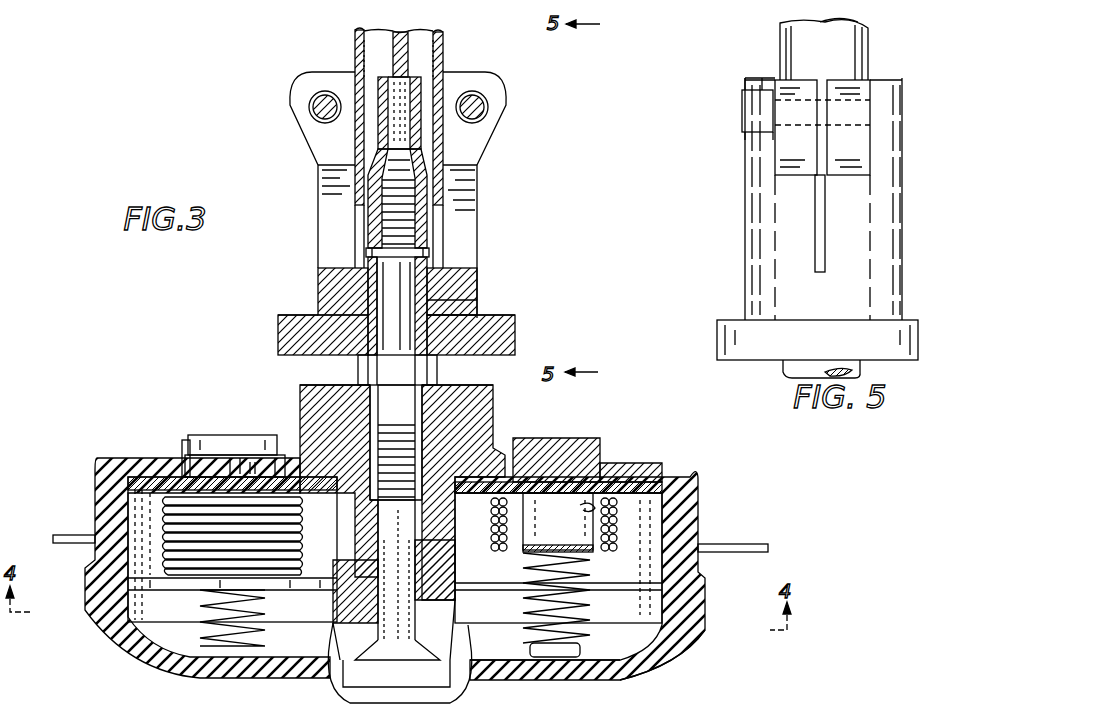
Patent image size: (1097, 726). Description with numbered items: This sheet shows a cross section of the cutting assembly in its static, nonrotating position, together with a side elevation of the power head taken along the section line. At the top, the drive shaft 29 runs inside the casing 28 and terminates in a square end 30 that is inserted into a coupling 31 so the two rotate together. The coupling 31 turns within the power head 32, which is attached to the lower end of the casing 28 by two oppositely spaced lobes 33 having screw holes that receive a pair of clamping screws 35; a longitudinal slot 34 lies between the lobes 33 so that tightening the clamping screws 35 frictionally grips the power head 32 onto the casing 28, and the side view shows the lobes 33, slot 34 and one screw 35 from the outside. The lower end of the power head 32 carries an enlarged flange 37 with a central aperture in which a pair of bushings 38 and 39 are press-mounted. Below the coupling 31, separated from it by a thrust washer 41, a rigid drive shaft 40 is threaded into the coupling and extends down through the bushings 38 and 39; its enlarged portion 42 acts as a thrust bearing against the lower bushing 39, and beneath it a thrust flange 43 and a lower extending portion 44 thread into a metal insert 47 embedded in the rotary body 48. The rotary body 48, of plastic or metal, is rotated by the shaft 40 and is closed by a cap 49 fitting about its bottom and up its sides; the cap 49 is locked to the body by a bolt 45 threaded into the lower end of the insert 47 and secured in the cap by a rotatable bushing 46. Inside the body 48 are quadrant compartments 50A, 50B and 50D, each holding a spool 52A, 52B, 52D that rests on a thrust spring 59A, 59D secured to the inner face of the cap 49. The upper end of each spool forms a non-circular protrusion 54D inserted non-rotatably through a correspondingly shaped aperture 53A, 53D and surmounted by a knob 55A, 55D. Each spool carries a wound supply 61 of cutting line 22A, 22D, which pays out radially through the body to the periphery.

In FIG. 3, the casing 28 is at (443, 48).
In FIG. 5, the casing 28 is at (870, 46).
In FIG. 3, the drive shaft 29 is at (390, 40).
In FIG. 3, the square end 30 is at (408, 98).
In FIG. 3, the coupling 31 is at (430, 172).
In FIG. 3, the power head 32 is at (478, 220).
In FIG. 5, the power head 32 is at (745, 242).
In FIG. 3, the lobes 33 is at (296, 131).
In FIG. 5, the lobes 33 is at (862, 146).
In FIG. 5, the longitudinal slot 34 is at (825, 252).
In FIG. 3, the clamping screws 35 is at (312, 103).
In FIG. 5, the clamping screws 35 is at (740, 110).
In FIG. 3, the enlarged flange 37 is at (515, 335).
In FIG. 5, the enlarged flange 37 is at (782, 330).
In FIG. 3, the bushing 38 is at (470, 281).
In FIG. 3, the bushing 39 is at (473, 309).
In FIG. 3, the rigid drive shaft 40 is at (390, 283).
In FIG. 3, the thrust washer 41 is at (370, 250).
In FIG. 3, the enlarged portion 42 is at (358, 366).
In FIG. 5, the enlarged portion 42 is at (782, 374).
In FIG. 3, the thrust flange 43 is at (493, 410).
In FIG. 3, the lower extending portion 44 is at (405, 413).
In FIG. 3, the bolt 45 is at (405, 618).
In FIG. 3, the rotatable bushing 46 is at (427, 578).
In FIG. 3, the metal insert 47 is at (428, 464).
In FIG. 3, the rotary body 48 is at (696, 473).
In FIG. 3, the cap 49 is at (690, 656).
In FIG. 3, the compartment 50A is at (655, 528).
In FIG. 3, the compartment 50B is at (545, 693).
In FIG. 3, the compartment 50D is at (137, 500).
In FIG. 3, the spool 52A is at (600, 450).
In FIG. 3, the spool 52B is at (400, 674).
In FIG. 3, the spool 52D is at (186, 440).
In FIG. 3, the aperture 53A is at (623, 487).
In FIG. 3, the aperture 53D is at (185, 458).
In FIG. 3, the protrusion 54D is at (262, 462).
In FIG. 3, the knob 55A is at (547, 438).
In FIG. 3, the knob 55D is at (220, 433).
In FIG. 3, the thrust spring 59A is at (585, 609).
In FIG. 3, the thrust spring 59D is at (195, 636).
In FIG. 3, the supply of cutting line 61 is at (290, 530).
In FIG. 3, the cutting line 22A is at (765, 542).
In FIG. 3, the cutting line 22D is at (70, 534).